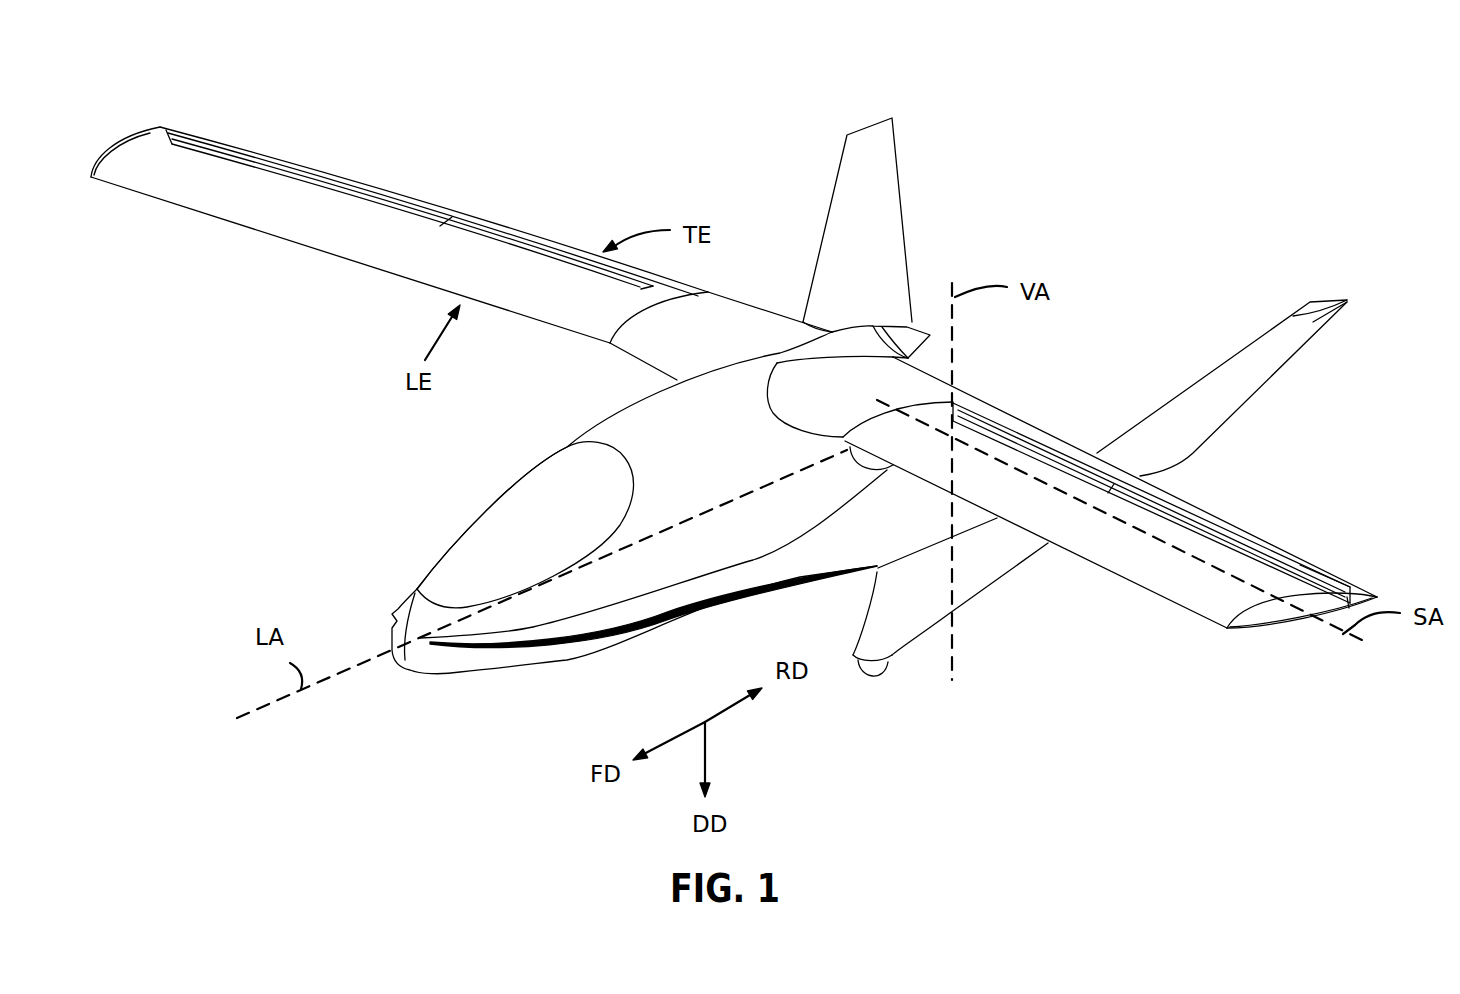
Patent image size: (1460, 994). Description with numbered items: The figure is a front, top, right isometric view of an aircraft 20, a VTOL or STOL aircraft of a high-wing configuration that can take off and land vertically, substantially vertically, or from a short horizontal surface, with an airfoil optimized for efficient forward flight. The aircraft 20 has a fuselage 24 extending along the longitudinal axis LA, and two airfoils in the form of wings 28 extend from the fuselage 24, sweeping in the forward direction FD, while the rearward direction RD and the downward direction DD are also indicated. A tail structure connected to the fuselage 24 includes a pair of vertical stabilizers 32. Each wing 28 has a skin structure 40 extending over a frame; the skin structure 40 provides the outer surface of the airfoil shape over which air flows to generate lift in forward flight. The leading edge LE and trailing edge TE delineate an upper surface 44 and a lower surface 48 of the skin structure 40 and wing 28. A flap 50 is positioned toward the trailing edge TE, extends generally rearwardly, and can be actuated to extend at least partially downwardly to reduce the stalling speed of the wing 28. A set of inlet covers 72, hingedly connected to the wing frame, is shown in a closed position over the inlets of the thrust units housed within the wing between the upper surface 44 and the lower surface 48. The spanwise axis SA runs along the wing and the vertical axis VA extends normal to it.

The aircraft 20 is at (758, 381).
The fuselage 24 is at (633, 415).
The wing 28 is at (365, 245).
The vertical stabilizer 32 is at (878, 135).
The skin structure 40 is at (183, 190).
The upper surface 44 is at (734, 379).
The lower surface 48 is at (1301, 659).
The flap 50 is at (1340, 582).
The inlet cover 72 is at (213, 142).